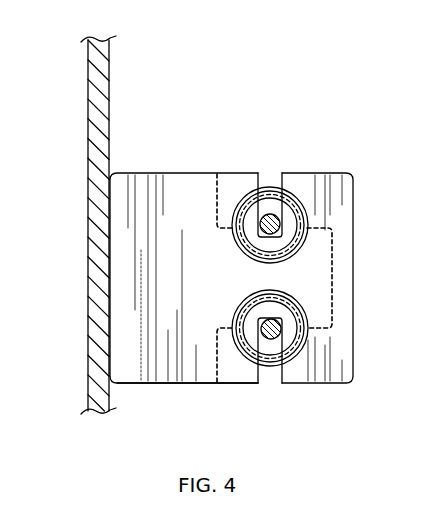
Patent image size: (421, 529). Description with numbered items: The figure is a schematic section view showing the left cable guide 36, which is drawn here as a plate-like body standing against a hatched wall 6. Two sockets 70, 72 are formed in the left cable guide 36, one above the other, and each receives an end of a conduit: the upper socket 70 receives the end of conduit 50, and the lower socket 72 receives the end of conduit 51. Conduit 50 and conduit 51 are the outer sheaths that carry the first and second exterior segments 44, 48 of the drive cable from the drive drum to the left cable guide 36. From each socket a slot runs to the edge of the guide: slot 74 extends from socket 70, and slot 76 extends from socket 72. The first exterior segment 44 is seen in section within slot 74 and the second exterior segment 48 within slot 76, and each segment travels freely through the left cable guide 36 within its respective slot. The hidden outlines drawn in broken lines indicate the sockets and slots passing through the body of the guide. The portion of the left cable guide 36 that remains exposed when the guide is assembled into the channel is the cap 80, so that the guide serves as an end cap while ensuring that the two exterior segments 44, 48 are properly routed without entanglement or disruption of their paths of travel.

The wall 6 is at (96, 138).
The left cable guide 36 is at (197, 168).
The first exterior segment 44 is at (274, 198).
The second exterior segment 48 is at (273, 343).
The conduit 50 is at (266, 198).
The conduit 51 is at (260, 300).
The socket 70 is at (303, 206).
The socket 72 is at (306, 318).
The slot 74 is at (269, 161).
The slot 76 is at (270, 386).
The cap 80 is at (157, 378).